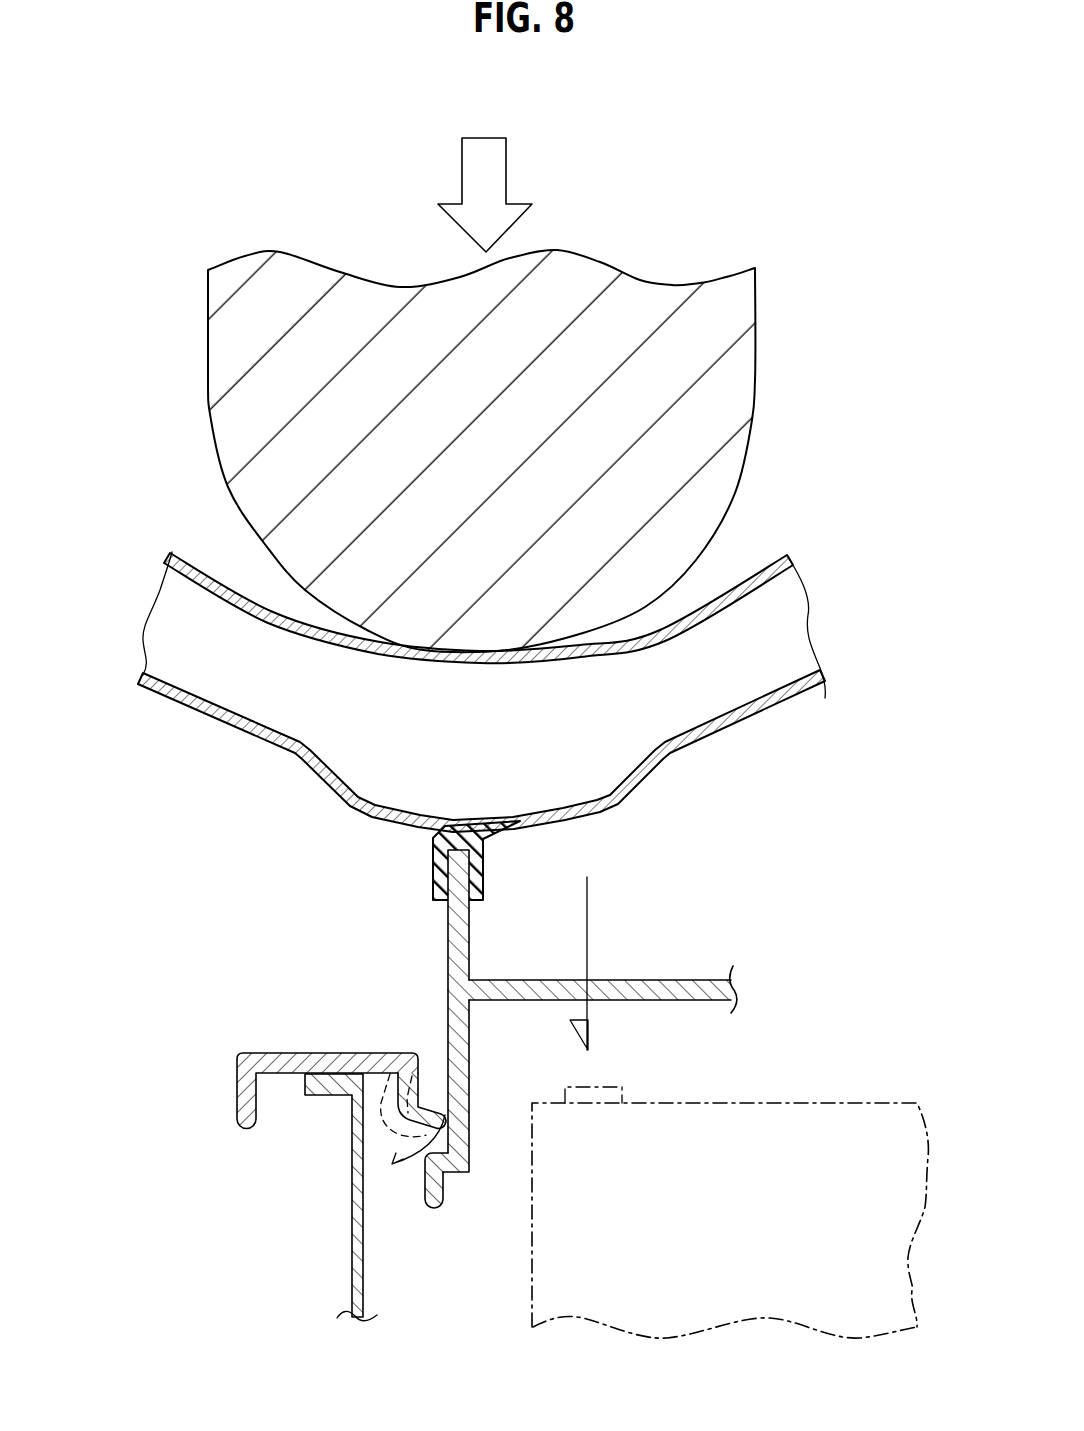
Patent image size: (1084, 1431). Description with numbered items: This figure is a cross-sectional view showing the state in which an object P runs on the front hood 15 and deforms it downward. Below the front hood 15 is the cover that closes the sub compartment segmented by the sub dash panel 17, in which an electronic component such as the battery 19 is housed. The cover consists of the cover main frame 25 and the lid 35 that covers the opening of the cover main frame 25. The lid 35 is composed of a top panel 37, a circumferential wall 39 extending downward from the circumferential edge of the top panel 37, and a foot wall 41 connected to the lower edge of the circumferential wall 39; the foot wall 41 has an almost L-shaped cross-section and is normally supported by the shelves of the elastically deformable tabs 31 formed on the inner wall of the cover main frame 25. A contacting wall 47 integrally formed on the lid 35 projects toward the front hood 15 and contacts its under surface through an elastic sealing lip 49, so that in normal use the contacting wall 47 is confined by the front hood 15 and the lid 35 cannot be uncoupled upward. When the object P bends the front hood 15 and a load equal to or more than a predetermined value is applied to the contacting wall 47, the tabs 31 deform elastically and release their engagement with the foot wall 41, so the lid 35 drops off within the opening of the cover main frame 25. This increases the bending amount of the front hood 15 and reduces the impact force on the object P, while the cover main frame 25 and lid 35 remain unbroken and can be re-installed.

The object P is at (642, 320).
The front hood 15 is at (682, 613).
The sealing lip 49 is at (497, 828).
The contacting wall 47 is at (445, 932).
The circumferential wall 39 is at (448, 1046).
The foot wall 41 is at (443, 1190).
The top panel 37 is at (676, 985).
The lid 35 is at (630, 979).
The cover main frame 25 is at (293, 1053).
The tab 31 is at (433, 1108).
The sub dash panel 17 is at (352, 1230).
The battery 19 is at (770, 1103).